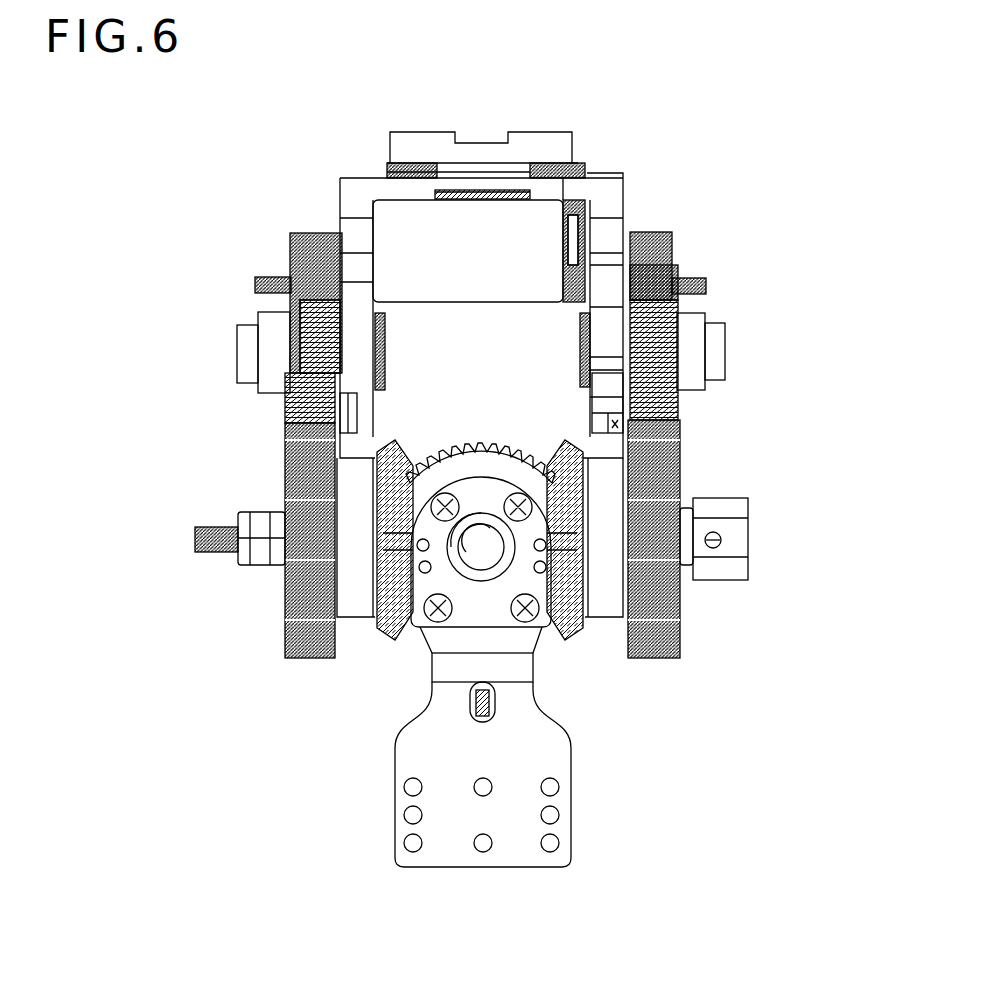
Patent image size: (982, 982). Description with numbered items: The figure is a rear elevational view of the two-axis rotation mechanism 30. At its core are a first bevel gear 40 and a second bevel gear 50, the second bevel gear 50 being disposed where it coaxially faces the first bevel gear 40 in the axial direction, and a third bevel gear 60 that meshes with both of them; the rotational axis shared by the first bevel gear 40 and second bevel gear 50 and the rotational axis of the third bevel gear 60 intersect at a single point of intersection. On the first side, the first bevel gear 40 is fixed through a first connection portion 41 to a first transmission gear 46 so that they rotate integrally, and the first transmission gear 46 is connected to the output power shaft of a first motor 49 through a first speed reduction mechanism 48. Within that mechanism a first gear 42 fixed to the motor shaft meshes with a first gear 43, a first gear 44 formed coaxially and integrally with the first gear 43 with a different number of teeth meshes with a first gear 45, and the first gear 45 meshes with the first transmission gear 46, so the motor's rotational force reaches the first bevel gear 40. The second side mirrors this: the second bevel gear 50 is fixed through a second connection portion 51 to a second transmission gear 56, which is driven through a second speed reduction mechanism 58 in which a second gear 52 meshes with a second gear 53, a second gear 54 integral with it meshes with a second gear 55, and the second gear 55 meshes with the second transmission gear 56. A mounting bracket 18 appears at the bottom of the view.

The mounting bracket 18 is at (560, 830).
The two-axis rotation mechanism 30 is at (506, 945).
The first bevel gear 40 is at (388, 452).
The first connection portion 41 is at (357, 610).
The first gear 42 is at (290, 233).
The first gear 43 is at (338, 225).
The first gear 44 is at (278, 277).
The first gear 45 is at (288, 408).
The first transmission gear 46 is at (305, 660).
The first speed reduction mechanism 48 is at (150, 315).
The first motor 49 is at (538, 245).
The second bevel gear 50 is at (570, 452).
The second connection portion 51 is at (608, 612).
The second gear 52 is at (668, 232).
The second gear 53 is at (627, 238).
The second gear 54 is at (680, 285).
The second gear 55 is at (673, 400).
The second transmission gear 56 is at (657, 660).
The second speed reduction mechanism 58 is at (815, 315).
The third bevel gear 60 is at (492, 448).